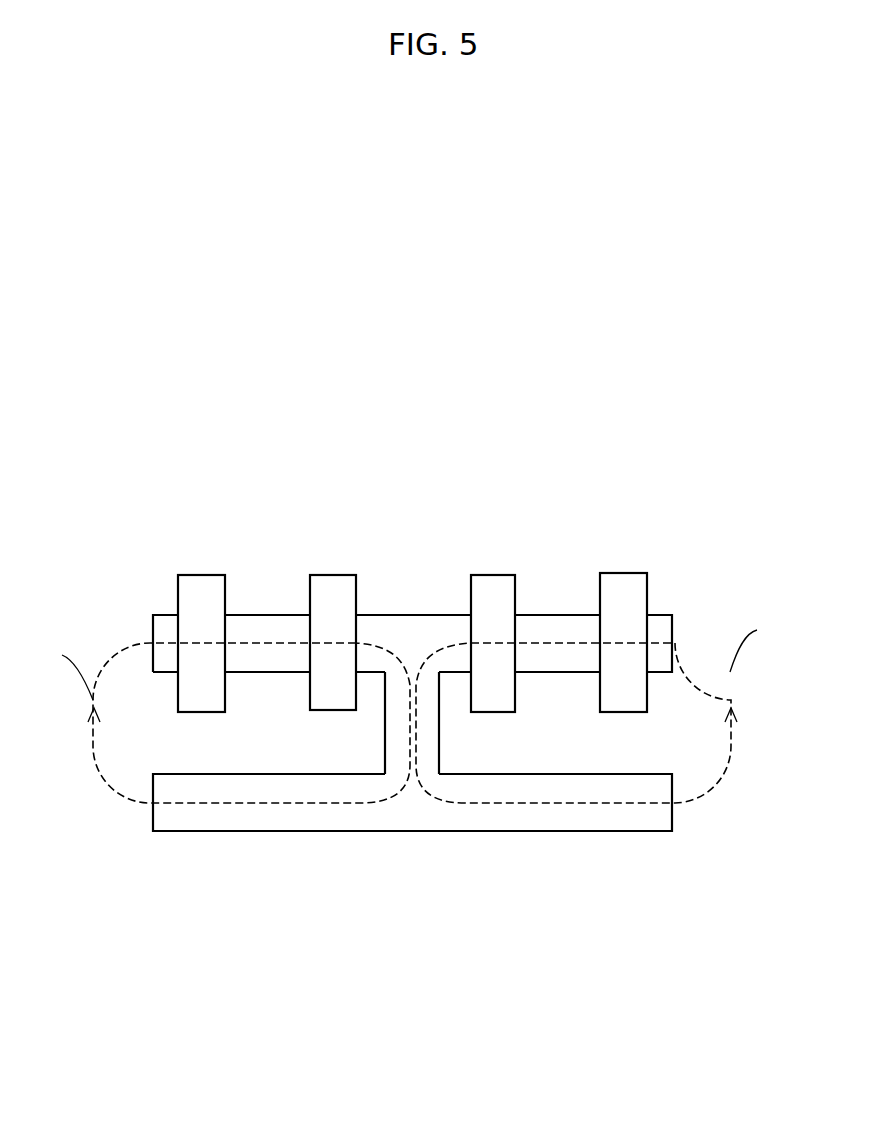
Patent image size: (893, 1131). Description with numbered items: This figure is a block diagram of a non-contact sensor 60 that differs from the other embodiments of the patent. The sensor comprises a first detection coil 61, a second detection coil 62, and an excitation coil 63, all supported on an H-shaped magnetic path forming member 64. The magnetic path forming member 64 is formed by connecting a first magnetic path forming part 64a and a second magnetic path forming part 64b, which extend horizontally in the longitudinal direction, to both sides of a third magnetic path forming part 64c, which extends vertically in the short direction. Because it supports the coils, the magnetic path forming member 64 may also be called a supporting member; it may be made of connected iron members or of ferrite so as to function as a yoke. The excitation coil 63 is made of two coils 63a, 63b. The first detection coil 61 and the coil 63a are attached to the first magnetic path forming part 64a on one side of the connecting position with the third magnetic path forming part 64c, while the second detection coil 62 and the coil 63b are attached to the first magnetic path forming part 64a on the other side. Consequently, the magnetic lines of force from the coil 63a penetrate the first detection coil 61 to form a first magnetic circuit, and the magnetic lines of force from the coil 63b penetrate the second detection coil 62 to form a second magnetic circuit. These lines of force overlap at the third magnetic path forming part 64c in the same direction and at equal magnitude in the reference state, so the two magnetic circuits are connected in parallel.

The non-contact sensor 60 is at (705, 546).
The first detection coil 61 is at (202, 574).
The second detection coil 62 is at (622, 573).
The excitation coil 63 is at (340, 519).
The coil 63a is at (340, 573).
The coil 63b is at (485, 573).
The magnetic path forming member 64 is at (222, 840).
The first magnetic path forming part 64a is at (152, 632).
The second magnetic path forming part 64b is at (152, 818).
The third magnetic path forming part 64c is at (385, 752).